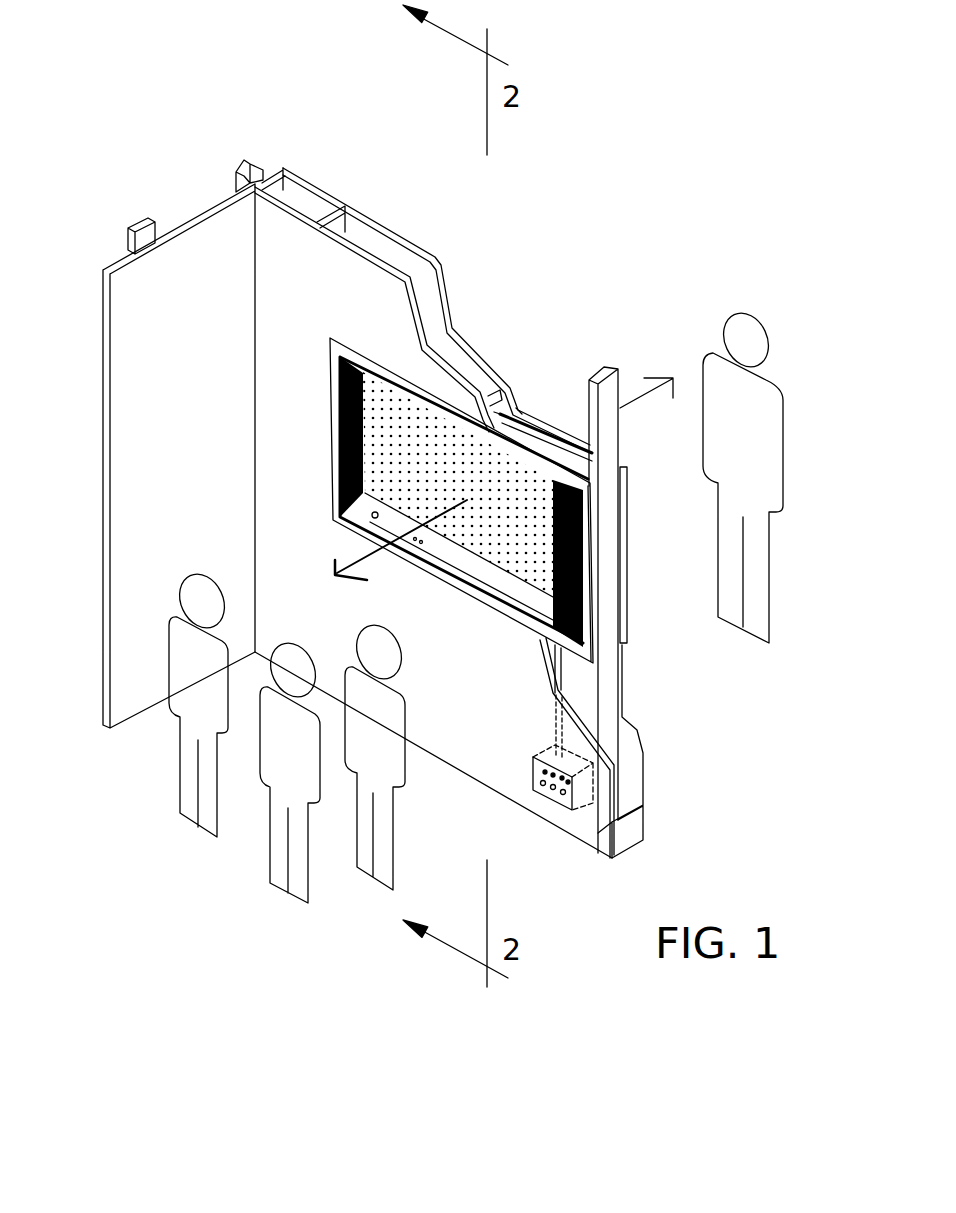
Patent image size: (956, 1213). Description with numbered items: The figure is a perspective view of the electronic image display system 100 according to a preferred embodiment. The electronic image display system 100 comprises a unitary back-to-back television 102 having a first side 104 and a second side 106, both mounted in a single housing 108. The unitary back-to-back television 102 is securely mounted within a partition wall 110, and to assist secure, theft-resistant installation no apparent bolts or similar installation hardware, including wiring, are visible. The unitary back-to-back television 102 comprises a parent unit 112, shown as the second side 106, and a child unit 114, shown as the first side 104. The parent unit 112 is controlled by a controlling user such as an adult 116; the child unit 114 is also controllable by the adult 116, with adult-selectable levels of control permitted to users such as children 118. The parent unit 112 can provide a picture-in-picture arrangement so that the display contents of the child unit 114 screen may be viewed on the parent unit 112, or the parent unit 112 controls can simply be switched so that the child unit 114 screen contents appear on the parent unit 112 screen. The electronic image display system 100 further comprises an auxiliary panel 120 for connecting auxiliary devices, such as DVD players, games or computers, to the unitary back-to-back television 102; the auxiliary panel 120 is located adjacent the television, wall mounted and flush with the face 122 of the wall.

The electronic image display system 100 is at (207, 970).
The unitary back-to-back television 102 is at (392, 480).
The first side 104 is at (383, 380).
The second side 106 is at (520, 412).
The single housing 108 is at (527, 437).
The partition wall 110 is at (445, 241).
The parent unit 112 is at (627, 535).
The child unit 114 is at (485, 603).
The adult 116 is at (765, 438).
The children 118 is at (215, 689).
The auxiliary panel 120 is at (553, 797).
The face of the wall 122 is at (312, 602).